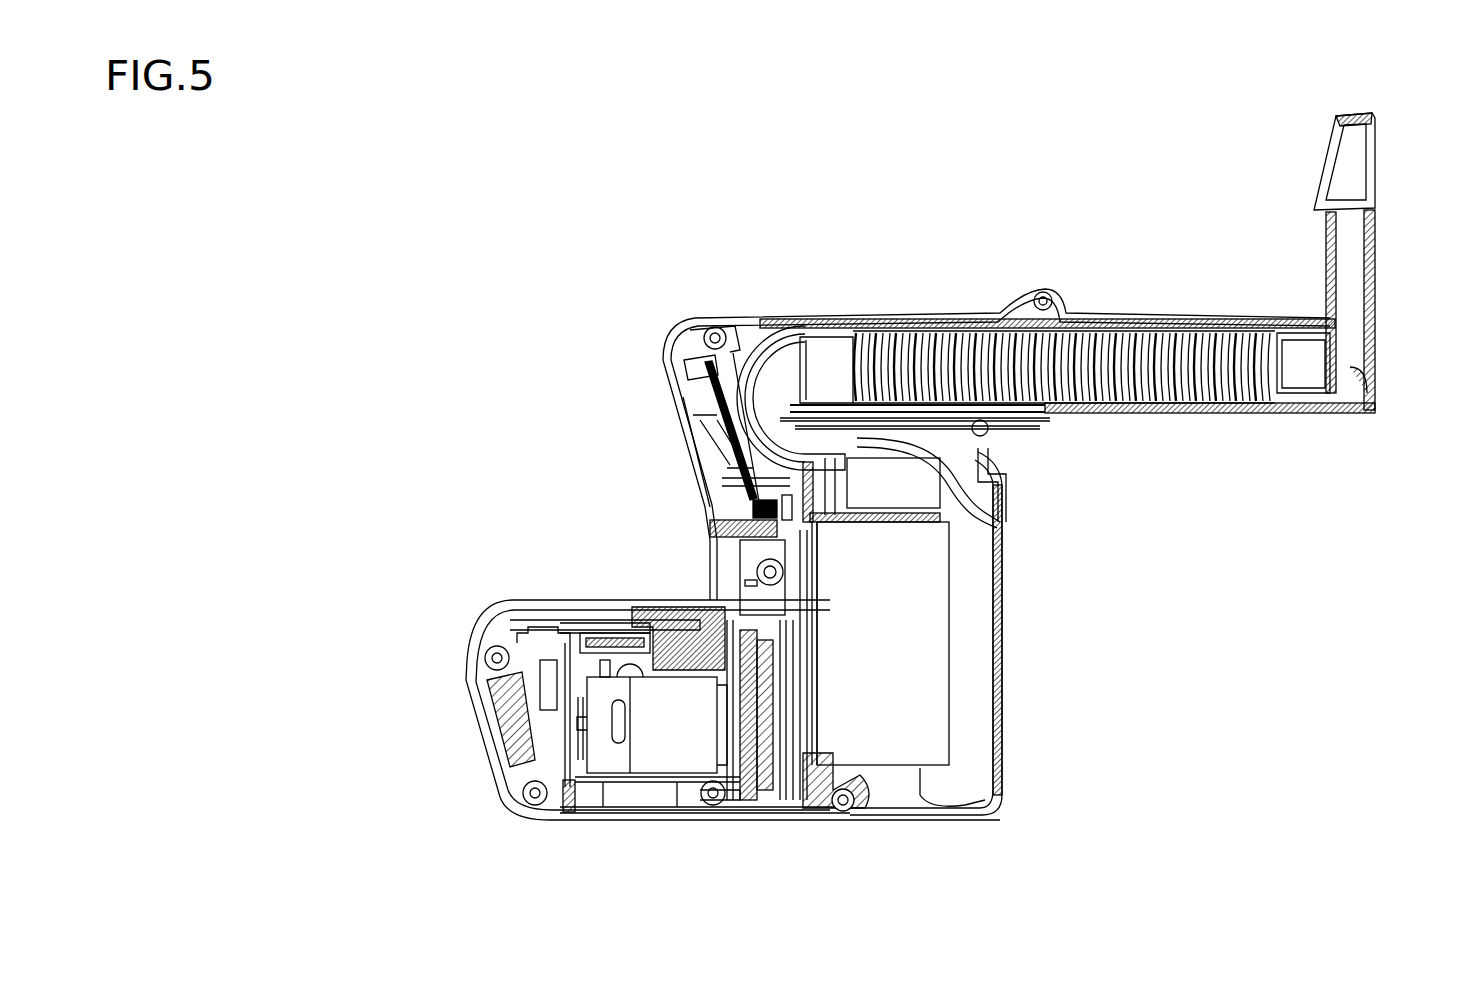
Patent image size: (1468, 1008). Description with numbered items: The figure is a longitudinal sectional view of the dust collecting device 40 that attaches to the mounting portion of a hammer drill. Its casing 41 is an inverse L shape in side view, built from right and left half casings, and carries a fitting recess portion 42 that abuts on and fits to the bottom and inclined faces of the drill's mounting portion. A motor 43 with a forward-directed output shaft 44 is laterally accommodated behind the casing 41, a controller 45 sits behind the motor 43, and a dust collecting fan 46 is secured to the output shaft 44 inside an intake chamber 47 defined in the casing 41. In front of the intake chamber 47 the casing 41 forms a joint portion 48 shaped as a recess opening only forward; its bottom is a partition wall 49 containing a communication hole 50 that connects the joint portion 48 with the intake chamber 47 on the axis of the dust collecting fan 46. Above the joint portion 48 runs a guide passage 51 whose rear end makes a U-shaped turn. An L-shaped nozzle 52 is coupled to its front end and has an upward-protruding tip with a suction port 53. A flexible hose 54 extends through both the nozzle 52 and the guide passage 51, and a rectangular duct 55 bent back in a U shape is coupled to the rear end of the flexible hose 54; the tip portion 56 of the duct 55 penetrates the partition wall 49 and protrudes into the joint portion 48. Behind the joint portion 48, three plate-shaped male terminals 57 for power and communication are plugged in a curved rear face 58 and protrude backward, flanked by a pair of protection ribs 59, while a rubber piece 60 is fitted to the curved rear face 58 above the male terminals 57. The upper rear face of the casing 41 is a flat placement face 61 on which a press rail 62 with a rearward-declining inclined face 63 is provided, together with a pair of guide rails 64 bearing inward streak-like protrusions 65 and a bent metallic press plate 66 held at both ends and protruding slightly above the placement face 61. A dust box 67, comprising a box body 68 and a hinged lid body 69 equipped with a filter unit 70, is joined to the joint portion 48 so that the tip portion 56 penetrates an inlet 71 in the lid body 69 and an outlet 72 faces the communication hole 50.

The dust collecting device 40 is at (918, 262).
The casing 41 is at (756, 318).
The fitting recess portion 42 is at (697, 442).
The motor 43 is at (648, 775).
The output shaft 44 is at (748, 800).
The controller 45 is at (480, 735).
The dust collecting fan 46 is at (775, 808).
The intake chamber 47 is at (730, 812).
The joint portion 48 is at (814, 375).
The partition wall 49 is at (807, 680).
The communication hole 50 is at (800, 720).
The guide passage 51 is at (966, 320).
The nozzle 52 is at (1260, 320).
The suction port 53 is at (1375, 184).
The flexible hose 54 is at (1100, 318).
The duct 55 is at (777, 335).
The tip portion 56 is at (823, 487).
The male terminals 57 is at (712, 525).
The curved rear face 58 is at (718, 478).
The protection ribs 59 is at (750, 512).
The rubber piece 60 is at (682, 345).
The placement face 61 is at (500, 612).
The press rail 62 is at (682, 600).
The inclined face 63 is at (645, 600).
The guide rails 64 is at (522, 608).
The streak-like protrusions 65 is at (566, 605).
The press plate 66 is at (545, 622).
The dust box 67 is at (1015, 630).
The box body 68 is at (1008, 570).
The lid body 69 is at (815, 528).
The filter unit 70 is at (965, 710).
The inlet 71 is at (840, 524).
The outlet 72 is at (813, 703).